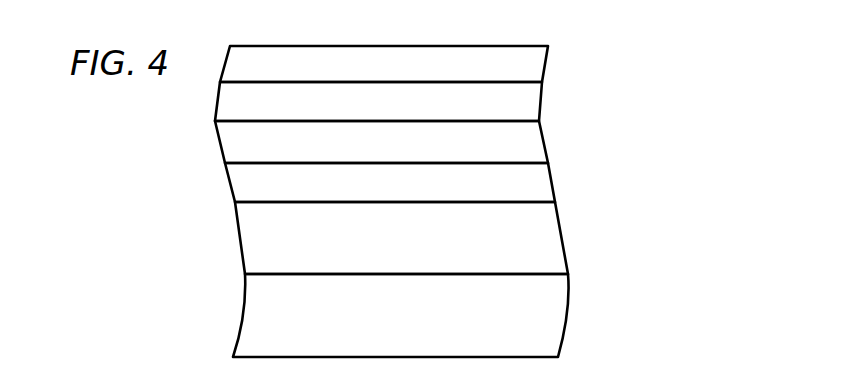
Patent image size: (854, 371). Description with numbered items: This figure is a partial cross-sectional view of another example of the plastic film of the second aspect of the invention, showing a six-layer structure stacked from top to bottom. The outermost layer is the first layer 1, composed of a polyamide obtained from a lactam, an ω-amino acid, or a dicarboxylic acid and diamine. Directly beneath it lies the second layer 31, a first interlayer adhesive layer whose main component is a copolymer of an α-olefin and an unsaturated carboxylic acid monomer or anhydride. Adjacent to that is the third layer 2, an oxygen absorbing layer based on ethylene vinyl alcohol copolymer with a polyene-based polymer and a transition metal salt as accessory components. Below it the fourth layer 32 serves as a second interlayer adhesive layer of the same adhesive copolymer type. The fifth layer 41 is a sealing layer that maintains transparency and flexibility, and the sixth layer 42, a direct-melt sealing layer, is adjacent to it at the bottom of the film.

The first layer 1 is at (548, 53).
The second layer 31 is at (542, 97).
The third layer 2 is at (542, 138).
The fourth layer 32 is at (545, 177).
The fifth layer 41 is at (567, 233).
The sixth layer 42 is at (568, 302).